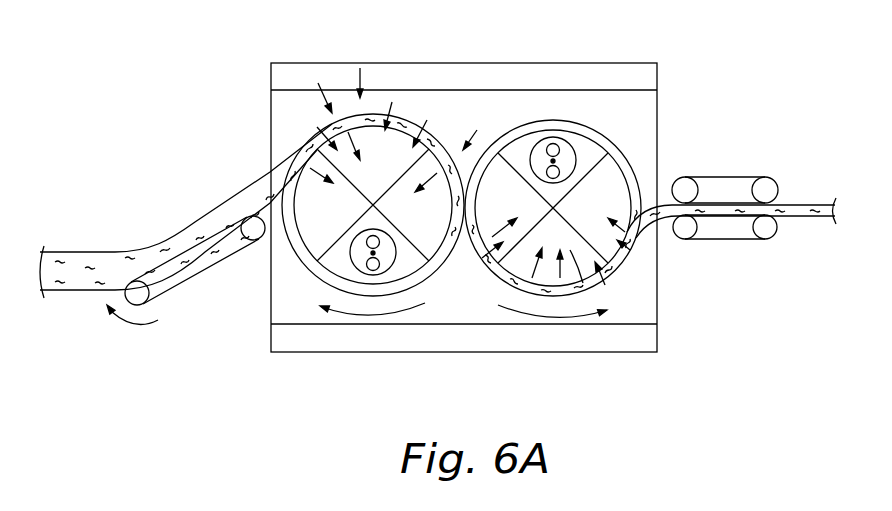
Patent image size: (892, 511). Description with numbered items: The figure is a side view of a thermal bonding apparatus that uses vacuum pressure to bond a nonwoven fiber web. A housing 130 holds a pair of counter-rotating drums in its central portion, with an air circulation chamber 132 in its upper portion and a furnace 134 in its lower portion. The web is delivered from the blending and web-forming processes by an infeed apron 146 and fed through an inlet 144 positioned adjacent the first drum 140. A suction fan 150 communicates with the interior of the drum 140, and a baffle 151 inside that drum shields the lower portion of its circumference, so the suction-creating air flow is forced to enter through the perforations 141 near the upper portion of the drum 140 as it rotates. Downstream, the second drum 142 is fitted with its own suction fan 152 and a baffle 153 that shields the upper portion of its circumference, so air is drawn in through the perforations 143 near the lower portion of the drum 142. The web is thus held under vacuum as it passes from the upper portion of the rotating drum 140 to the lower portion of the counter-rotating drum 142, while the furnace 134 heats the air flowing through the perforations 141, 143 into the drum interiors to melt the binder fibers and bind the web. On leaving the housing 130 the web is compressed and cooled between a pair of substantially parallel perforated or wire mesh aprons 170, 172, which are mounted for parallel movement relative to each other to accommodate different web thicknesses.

The housing 130 is at (660, 105).
The air circulation chamber 132 is at (478, 70).
The furnace 134 is at (462, 342).
The drum 140 is at (305, 262).
The perforations 141 is at (402, 133).
The drum 142 is at (632, 168).
The perforations 143 is at (555, 233).
The inlet 144 is at (268, 165).
The infeed apron 146 is at (182, 285).
The suction fan 150 is at (352, 250).
The baffle 151 is at (433, 248).
The suction fan 152 is at (538, 163).
The baffle 153 is at (597, 150).
The first perforated apron 170 is at (742, 177).
The second perforated apron 172 is at (745, 242).